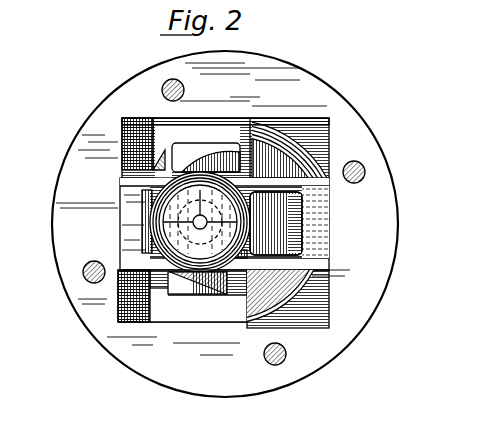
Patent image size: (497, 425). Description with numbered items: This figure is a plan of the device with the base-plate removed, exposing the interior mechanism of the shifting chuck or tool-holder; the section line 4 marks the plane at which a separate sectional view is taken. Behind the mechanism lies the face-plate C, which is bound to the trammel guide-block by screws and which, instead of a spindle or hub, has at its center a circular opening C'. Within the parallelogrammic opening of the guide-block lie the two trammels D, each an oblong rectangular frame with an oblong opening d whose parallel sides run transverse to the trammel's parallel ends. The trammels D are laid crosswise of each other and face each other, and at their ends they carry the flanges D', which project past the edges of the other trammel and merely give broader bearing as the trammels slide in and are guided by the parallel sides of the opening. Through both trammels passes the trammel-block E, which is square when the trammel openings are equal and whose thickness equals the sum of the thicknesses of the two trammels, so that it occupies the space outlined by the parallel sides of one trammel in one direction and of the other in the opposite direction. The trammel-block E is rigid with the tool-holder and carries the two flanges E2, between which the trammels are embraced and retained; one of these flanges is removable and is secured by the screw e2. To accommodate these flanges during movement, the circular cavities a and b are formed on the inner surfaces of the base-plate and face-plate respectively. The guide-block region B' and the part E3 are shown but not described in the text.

The section line 4 4 is at (150, 216).
The face-plate C is at (225, 148).
The circular opening C' is at (312, 166).
The flanges D' is at (223, 233).
The circular cavity a is at (300, 235).
The trammel-block E is at (340, 269).
The flanges E2 is at (200, 222).
The screw e2 is at (199, 234).
The valve arm E3 is at (276, 223).
The trammels D is at (237, 306).
The oblong opening d is at (192, 294).
The lower right block B' is at (302, 299).
The circular cavity b is at (277, 300).